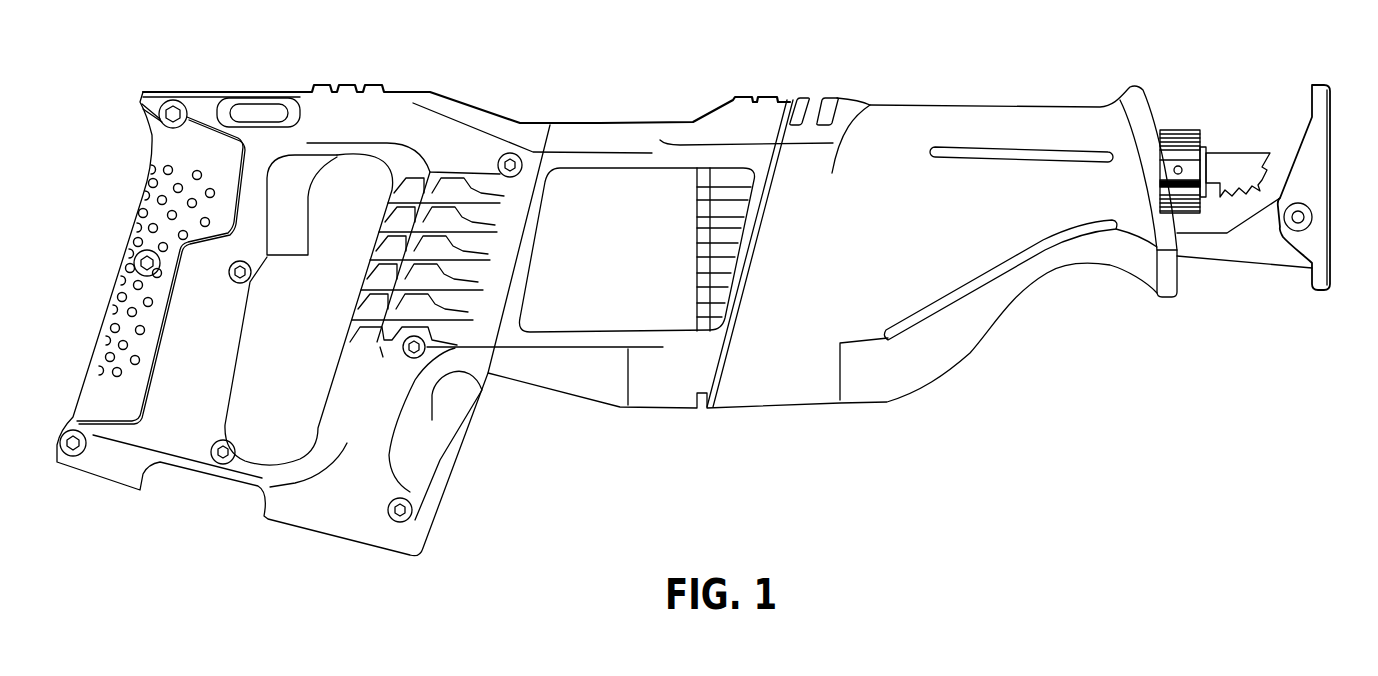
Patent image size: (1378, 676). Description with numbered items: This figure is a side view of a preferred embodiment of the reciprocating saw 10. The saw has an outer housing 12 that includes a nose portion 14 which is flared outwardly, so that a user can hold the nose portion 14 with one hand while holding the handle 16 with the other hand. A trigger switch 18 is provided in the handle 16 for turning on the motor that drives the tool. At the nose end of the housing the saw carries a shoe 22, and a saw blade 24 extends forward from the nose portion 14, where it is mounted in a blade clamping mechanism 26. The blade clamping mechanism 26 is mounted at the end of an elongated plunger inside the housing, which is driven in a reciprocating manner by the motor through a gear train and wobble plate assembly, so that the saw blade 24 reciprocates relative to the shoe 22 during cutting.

The reciprocating saw 10 is at (1026, 40).
The outer housing 12 is at (712, 103).
The nose portion 14 is at (1168, 281).
The handle 16 is at (187, 433).
The trigger switch 18 is at (290, 217).
The shoe 22 is at (1317, 243).
The saw blade 24 is at (1240, 170).
The blade clamping mechanism 26 is at (1177, 143).